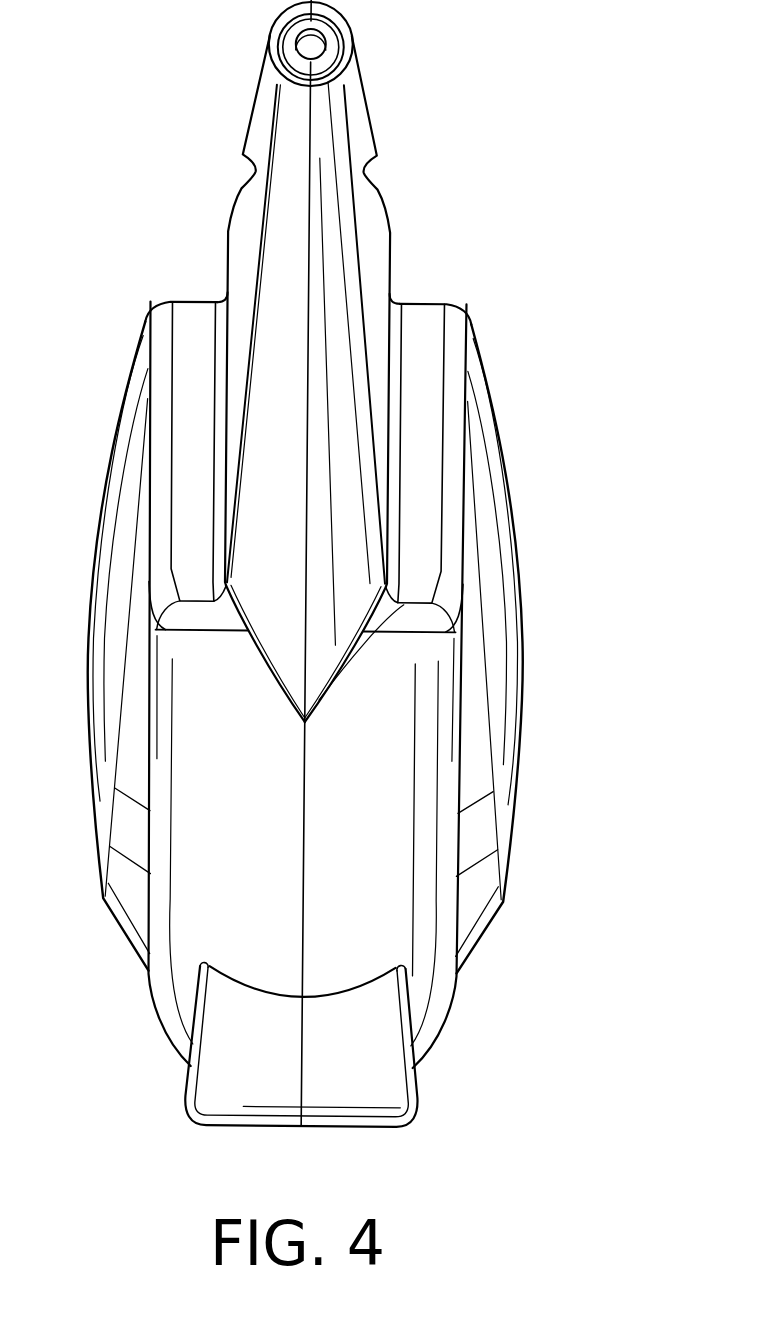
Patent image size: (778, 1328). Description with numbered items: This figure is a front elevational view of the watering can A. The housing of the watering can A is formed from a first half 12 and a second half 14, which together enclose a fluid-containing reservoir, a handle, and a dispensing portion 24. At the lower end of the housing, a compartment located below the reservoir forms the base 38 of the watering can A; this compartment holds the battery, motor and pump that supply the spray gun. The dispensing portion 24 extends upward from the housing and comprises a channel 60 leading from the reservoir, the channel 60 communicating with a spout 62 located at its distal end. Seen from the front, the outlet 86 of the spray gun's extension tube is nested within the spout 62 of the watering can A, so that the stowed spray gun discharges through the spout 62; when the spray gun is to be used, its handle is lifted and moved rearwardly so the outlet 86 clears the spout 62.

The watering can A is at (522, 469).
The first half 12 is at (177, 988).
The second half 14 is at (402, 938).
The dispensing portion 24 is at (256, 209).
The base 38 is at (373, 1095).
The channel 60 is at (334, 228).
The spout 62 is at (338, 50).
The outlet 86 is at (311, 49).